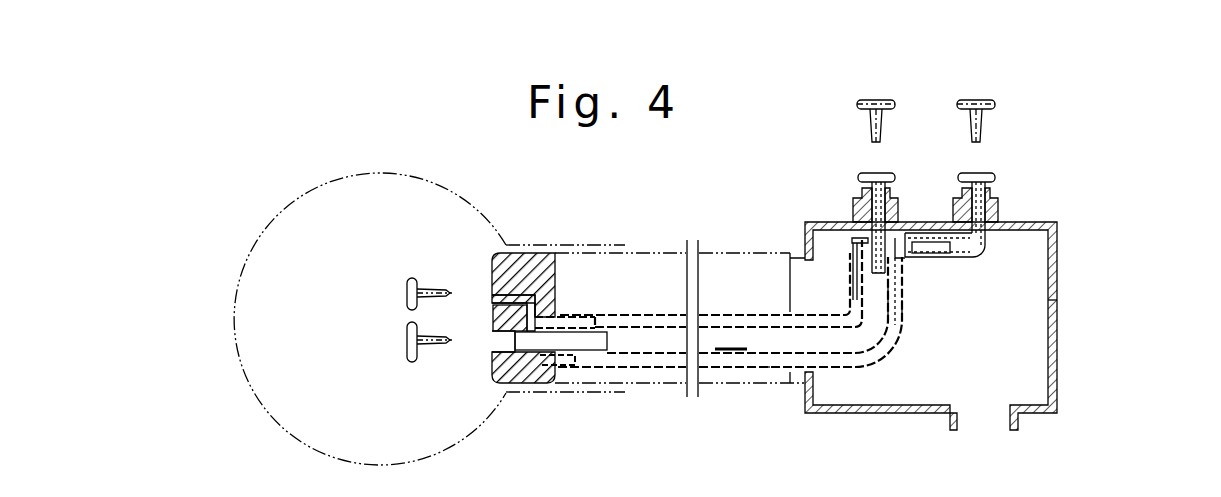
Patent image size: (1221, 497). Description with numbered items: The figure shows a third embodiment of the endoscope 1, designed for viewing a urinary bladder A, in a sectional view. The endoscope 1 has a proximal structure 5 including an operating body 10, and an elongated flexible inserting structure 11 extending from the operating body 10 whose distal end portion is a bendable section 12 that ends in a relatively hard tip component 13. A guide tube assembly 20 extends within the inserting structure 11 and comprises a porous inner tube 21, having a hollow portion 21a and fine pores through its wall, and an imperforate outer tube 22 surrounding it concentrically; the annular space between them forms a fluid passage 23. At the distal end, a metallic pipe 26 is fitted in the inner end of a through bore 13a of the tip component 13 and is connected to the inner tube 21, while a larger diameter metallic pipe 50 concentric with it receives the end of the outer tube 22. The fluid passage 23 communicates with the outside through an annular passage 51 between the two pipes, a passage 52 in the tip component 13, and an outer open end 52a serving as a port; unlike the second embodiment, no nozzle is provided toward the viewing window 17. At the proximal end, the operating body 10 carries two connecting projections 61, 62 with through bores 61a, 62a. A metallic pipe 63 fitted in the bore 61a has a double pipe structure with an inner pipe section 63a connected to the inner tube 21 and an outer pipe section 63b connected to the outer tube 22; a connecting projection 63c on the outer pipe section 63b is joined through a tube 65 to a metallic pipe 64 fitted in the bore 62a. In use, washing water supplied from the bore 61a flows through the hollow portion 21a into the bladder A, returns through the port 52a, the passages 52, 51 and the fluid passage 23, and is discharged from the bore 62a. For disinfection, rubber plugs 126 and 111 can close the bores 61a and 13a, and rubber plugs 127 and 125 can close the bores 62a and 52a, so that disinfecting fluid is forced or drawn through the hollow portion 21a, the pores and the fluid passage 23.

The urinary bladder A is at (393, 173).
The endoscope 1 is at (598, 400).
The proximal structure 5 is at (1062, 382).
The operating body 10 is at (1030, 222).
The inserting structure 11 is at (757, 251).
The bendable section 12 is at (637, 253).
The tip component 13 is at (547, 260).
The through bore 13a is at (495, 341).
The viewing window 17 is at (497, 316).
The guide tube assembly 20 is at (713, 306).
The inner tube 21 is at (650, 366).
The hollow portion 21a is at (730, 339).
The outer tube 22 is at (762, 368).
The fluid passage 23 is at (720, 392).
The metallic pipe 26 is at (592, 328).
The metallic pipe 50 is at (580, 330).
The annular passage 51 is at (554, 356).
The passage 52 is at (558, 316).
The outer open end 52a is at (493, 298).
The connecting projection 61 is at (890, 206).
The through bore 61a is at (876, 177).
The connecting projection 62 is at (995, 206).
The through bore 62a is at (978, 177).
The metallic pipe 63 is at (852, 236).
The inner pipe section 63a is at (903, 322).
The outer pipe section 63b is at (896, 290).
The connecting projection 63c is at (905, 258).
The metallic pipe 64 is at (976, 250).
The tube 65 is at (936, 257).
The rubber plug 111 is at (405, 360).
The rubber plug 125 is at (405, 283).
The rubber plug 126 is at (860, 101).
The rubber plug 127 is at (992, 101).